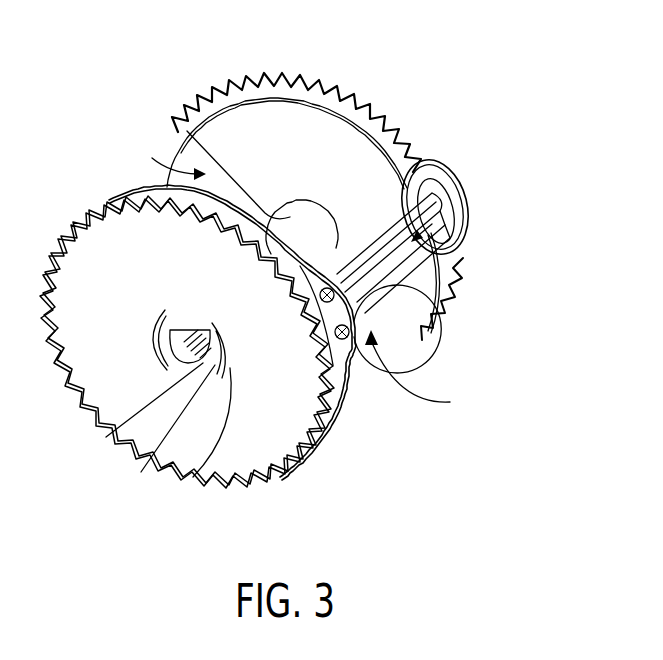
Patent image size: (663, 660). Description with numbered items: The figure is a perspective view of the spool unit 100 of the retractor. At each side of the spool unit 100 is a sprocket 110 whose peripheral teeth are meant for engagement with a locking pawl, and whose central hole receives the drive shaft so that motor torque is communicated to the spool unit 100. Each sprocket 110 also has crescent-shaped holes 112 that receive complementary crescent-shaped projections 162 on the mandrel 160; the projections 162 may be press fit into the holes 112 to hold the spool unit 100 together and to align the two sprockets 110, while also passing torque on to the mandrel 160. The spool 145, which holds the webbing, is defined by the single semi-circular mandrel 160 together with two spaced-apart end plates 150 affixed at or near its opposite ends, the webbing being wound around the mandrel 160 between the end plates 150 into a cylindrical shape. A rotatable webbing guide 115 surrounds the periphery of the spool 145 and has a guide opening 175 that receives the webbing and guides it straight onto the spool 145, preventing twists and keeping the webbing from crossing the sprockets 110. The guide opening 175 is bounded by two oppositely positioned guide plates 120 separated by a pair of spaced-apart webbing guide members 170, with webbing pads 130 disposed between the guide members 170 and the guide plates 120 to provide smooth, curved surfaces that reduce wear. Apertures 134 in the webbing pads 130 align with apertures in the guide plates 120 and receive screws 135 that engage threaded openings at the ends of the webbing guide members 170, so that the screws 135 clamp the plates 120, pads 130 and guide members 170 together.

The spool unit 100 is at (455, 104).
The sprocket 110 is at (214, 96).
The hole 112 is at (195, 476).
The webbing guide 115 is at (418, 378).
The guide plate 120 is at (442, 174).
The webbing pad 130 is at (463, 218).
The aperture 134 is at (106, 437).
The screw 135 is at (345, 342).
The spool 145 is at (156, 159).
The end plate 150 is at (291, 121).
The mandrel 160 is at (187, 131).
The projection 162 is at (141, 472).
The webbing guide member 170 is at (408, 178).
The guide opening 175 is at (468, 243).